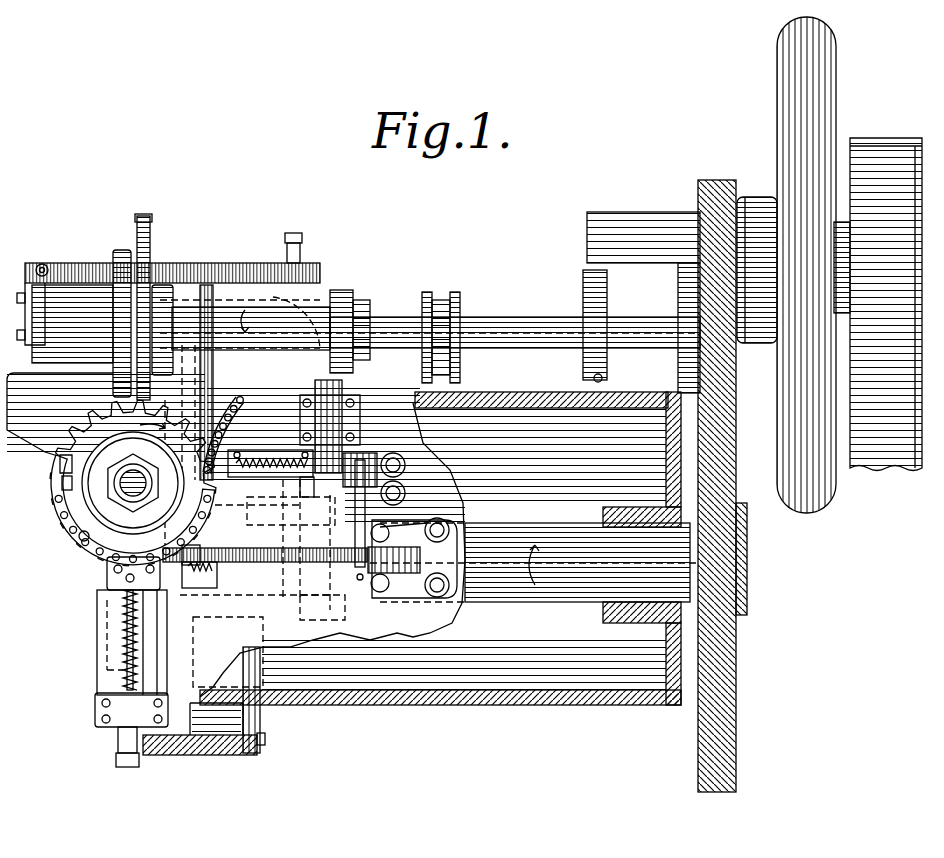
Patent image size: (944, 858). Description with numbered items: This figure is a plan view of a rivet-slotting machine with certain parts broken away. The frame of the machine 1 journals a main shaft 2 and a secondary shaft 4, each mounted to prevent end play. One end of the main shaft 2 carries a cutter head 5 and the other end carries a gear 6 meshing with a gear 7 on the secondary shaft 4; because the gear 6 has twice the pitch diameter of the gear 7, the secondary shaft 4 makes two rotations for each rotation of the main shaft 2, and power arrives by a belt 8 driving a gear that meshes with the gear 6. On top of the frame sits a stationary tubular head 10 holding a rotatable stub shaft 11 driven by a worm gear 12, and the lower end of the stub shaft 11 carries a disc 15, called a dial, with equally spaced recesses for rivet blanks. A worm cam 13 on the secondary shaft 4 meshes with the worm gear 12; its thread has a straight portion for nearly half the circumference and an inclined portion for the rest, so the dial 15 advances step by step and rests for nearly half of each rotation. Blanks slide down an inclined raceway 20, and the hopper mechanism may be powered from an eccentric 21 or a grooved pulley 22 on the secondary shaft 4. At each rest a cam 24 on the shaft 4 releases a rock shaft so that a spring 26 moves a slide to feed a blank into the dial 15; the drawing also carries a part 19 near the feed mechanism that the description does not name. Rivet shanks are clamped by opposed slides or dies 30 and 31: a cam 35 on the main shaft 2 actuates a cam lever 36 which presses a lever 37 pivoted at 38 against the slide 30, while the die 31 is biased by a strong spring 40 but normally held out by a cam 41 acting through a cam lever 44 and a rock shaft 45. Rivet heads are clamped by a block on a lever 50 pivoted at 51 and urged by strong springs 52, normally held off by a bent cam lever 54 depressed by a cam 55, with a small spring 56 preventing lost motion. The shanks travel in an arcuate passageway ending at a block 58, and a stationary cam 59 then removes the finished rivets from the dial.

The frame of the machine 1 is at (666, 471).
The main shaft 2 is at (575, 530).
The secondary shaft 4 is at (527, 320).
The cutter head 5 is at (97, 660).
The gear 6 is at (736, 688).
The gear 7 is at (728, 433).
The belt 8 is at (873, 470).
The stationary tubular head 10 is at (68, 505).
The stub shaft 11 is at (128, 482).
The worm gear 12 is at (60, 462).
The worm cam 13 is at (160, 290).
The disc (dial) 15 is at (82, 538).
The lever 19 is at (375, 457).
The inclined raceway 20 is at (240, 400).
The eccentric 21 is at (447, 296).
The grooved pulley 22 is at (588, 372).
The cam 24 is at (353, 297).
The spring 26 is at (307, 489).
The slide (die) 30 is at (112, 425).
The slide (die) 31 is at (123, 605).
The cam 35 is at (321, 615).
The cam lever 36 is at (318, 291).
The lever 37 is at (222, 270).
The pivot 38 is at (43, 264).
The spring 40 is at (125, 626).
The cam 41 is at (248, 510).
The cam lever 44 is at (262, 713).
The rock shaft 45 is at (266, 739).
The lever 50 is at (217, 575).
The pivot 51 is at (245, 550).
The springs 52 is at (390, 528).
The bent cam lever 54 is at (368, 555).
The cam 55 is at (358, 612).
The small spring 56 is at (357, 577).
The block 58 is at (107, 567).
The stationary cam 59 is at (62, 483).